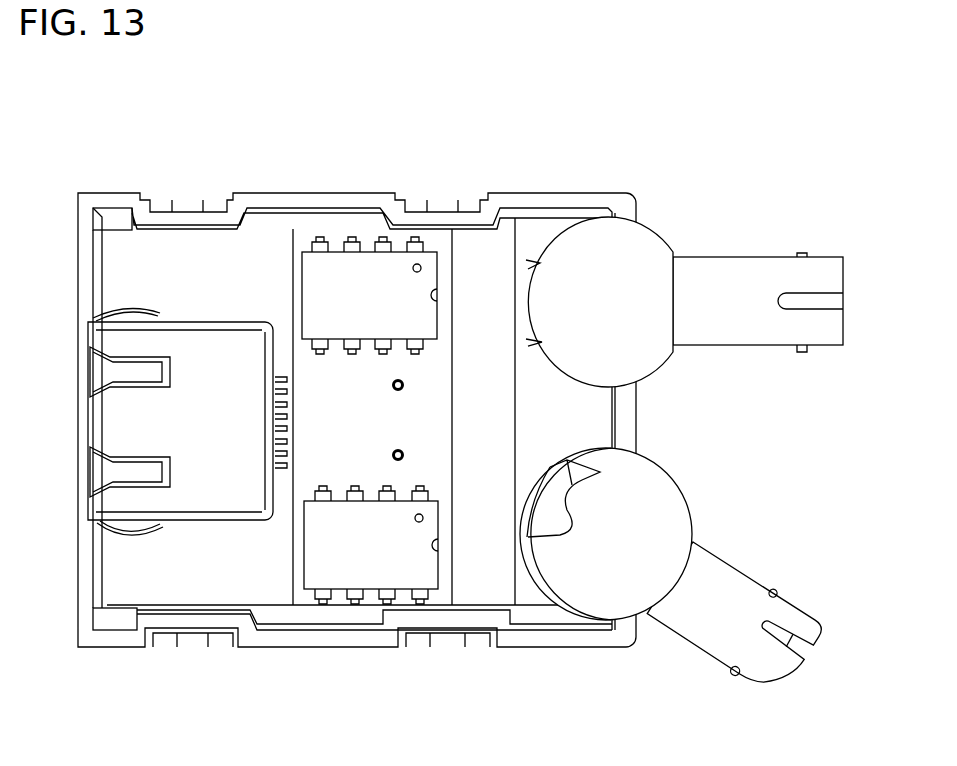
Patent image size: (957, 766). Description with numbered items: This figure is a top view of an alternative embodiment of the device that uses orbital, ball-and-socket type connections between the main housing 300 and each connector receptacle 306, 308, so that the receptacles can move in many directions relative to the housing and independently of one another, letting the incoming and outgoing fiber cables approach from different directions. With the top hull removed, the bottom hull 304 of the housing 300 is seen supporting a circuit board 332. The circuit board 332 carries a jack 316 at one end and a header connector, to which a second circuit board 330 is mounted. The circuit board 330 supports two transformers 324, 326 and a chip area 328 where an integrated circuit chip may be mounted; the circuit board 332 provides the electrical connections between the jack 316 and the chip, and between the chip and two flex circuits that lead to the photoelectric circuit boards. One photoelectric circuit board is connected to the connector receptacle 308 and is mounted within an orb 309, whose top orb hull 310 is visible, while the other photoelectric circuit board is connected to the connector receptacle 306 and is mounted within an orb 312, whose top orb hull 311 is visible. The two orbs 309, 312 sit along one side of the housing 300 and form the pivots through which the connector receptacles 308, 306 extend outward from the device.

The main housing 300 is at (234, 662).
The bottom hull 304 is at (340, 640).
The connector receptacle 306 is at (707, 563).
The connector receptacle 308 is at (710, 265).
The orb 309 is at (672, 377).
The top orb hull 310 is at (643, 235).
The top orb hull 311 is at (672, 502).
The orb 312 is at (680, 465).
The jack 316 is at (105, 503).
The transformer 324 is at (335, 262).
The transformer 326 is at (420, 565).
The chip area 328 is at (320, 466).
The circuit board 330 is at (442, 242).
The circuit board 332 is at (181, 240).